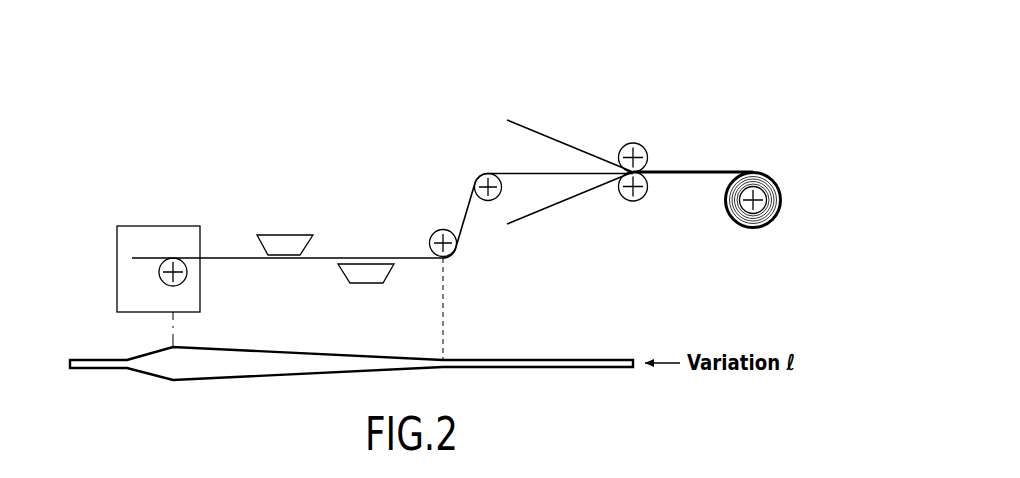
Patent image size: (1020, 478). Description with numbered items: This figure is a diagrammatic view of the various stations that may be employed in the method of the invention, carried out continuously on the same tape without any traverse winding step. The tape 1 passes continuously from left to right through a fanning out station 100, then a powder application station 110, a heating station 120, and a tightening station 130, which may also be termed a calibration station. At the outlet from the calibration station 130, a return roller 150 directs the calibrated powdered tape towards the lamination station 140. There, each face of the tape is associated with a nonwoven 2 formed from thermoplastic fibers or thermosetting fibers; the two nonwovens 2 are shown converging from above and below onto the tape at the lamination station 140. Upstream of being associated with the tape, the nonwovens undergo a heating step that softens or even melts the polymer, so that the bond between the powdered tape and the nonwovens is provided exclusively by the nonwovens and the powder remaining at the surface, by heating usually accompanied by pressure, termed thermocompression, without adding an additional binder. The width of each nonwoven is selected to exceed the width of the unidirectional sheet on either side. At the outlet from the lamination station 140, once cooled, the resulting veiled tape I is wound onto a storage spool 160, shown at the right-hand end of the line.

The tape 1 is at (234, 260).
The nonwoven 2 is at (528, 128).
The veiled tape I is at (700, 170).
The fanning out station 100 is at (150, 218).
The powder application station 110 is at (285, 230).
The heating station 120 is at (367, 252).
The tightening station 130 is at (458, 262).
The lamination station 140 is at (634, 203).
The return roller 150 is at (477, 178).
The storage spool 160 is at (759, 212).